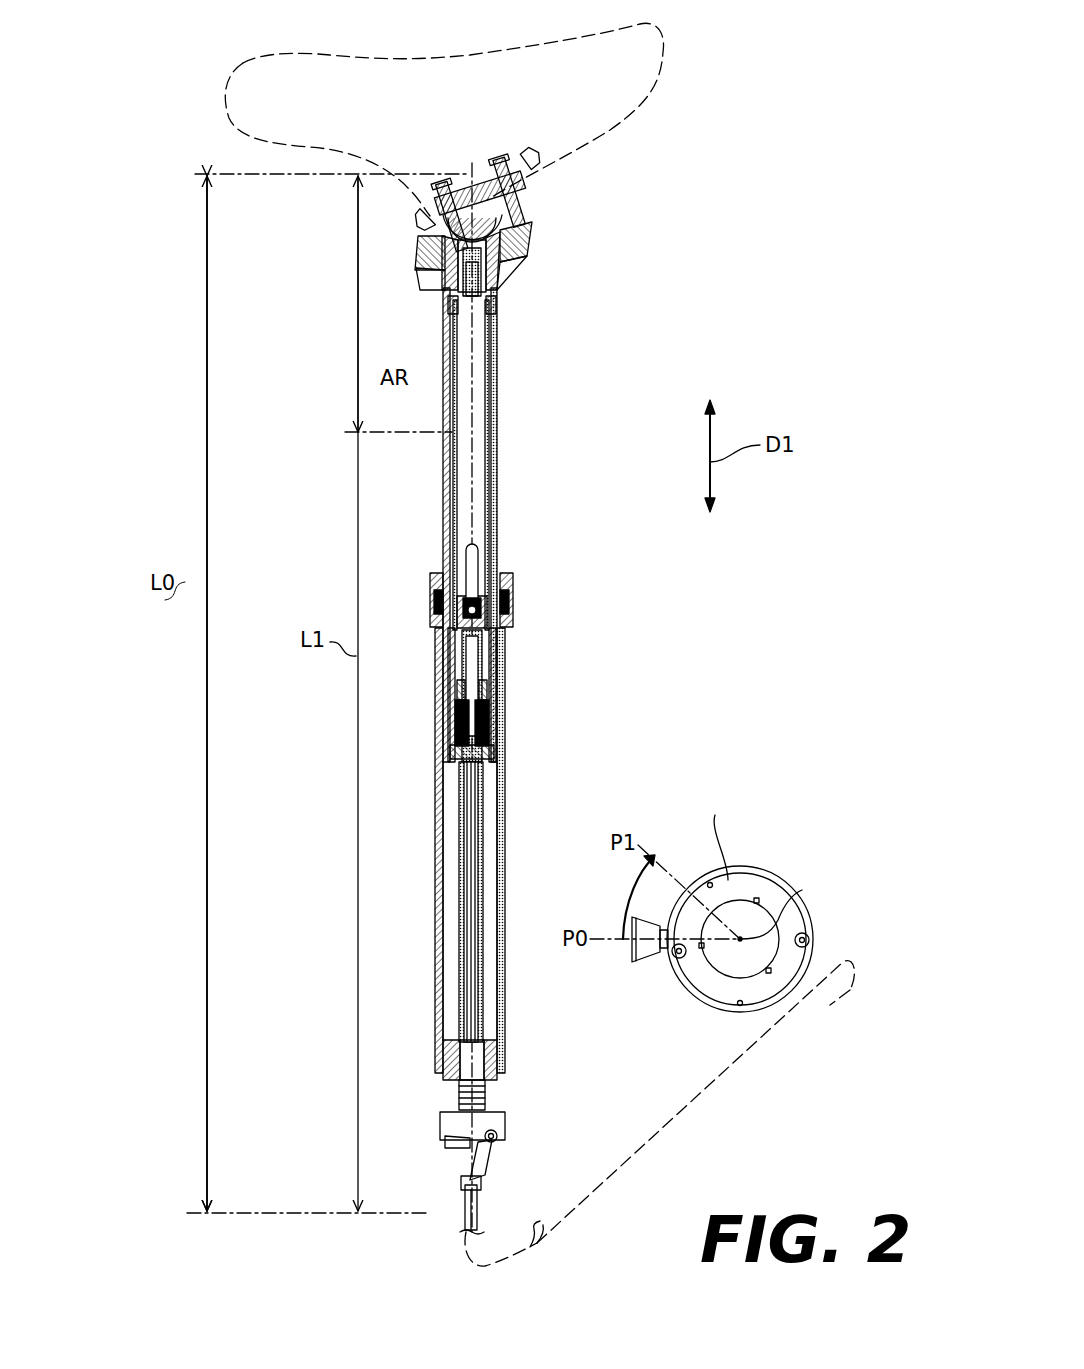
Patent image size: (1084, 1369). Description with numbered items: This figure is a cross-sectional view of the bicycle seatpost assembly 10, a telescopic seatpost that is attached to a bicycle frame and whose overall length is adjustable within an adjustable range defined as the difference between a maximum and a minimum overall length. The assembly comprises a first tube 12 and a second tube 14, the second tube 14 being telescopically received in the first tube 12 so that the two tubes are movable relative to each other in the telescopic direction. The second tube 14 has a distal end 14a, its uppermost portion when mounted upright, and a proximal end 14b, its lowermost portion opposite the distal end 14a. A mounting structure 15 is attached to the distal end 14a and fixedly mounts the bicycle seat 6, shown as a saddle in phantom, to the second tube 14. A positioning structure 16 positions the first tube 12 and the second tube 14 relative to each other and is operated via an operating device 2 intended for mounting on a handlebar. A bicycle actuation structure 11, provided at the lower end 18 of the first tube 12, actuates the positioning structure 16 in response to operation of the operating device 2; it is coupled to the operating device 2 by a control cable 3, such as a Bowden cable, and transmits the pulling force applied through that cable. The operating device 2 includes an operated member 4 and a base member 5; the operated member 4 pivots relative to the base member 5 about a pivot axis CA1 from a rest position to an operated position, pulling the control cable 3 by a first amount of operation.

The operating device 2 is at (746, 862).
The control cable 3 is at (706, 1107).
The operated member 4 is at (646, 966).
The base member 5 is at (715, 833).
The bicycle seat 6 is at (665, 74).
The bicycle seatpost assembly 10 is at (626, 352).
The bicycle actuation structure 11 is at (508, 1142).
The first tube 12 is at (509, 782).
The second tube 14 is at (506, 405).
The distal end 14a is at (497, 297).
The proximal end 14b is at (497, 720).
The mounting structure 15 is at (535, 225).
The positioning structure 16 is at (480, 592).
The lower end 18 is at (500, 1068).
The pivot axis CA1 is at (802, 890).